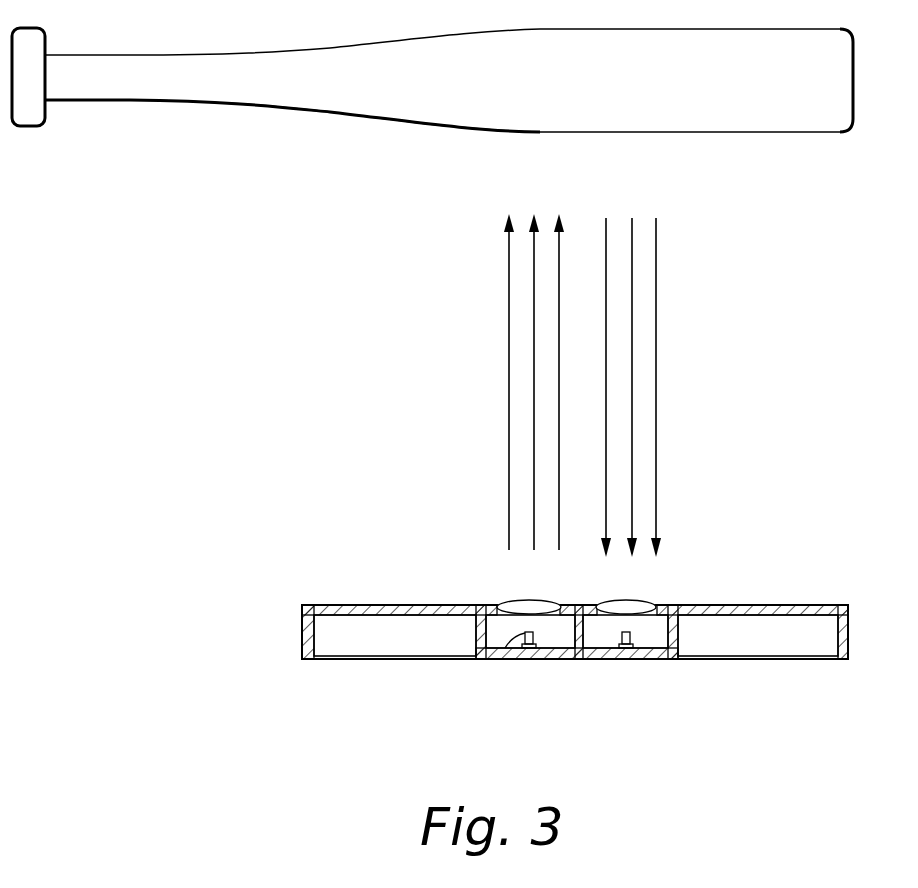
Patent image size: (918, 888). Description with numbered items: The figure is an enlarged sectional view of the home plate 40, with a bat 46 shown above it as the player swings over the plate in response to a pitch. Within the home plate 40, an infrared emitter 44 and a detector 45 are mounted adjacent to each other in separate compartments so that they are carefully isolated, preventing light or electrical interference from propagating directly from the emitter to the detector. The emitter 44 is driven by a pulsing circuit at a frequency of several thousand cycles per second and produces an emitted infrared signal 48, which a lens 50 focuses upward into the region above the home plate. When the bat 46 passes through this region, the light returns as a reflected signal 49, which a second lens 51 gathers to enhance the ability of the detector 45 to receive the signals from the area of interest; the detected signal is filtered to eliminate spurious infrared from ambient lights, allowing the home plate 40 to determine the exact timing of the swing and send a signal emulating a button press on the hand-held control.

The home plate 40 is at (290, 606).
The infrared emitter 44 is at (503, 660).
The detector 45 is at (630, 632).
The bat 46 is at (390, 103).
The emitted infrared signal 48 is at (534, 340).
The reflected signal 49 is at (633, 380).
The emitter lens 50 is at (515, 602).
The detector lens 51 is at (638, 603).